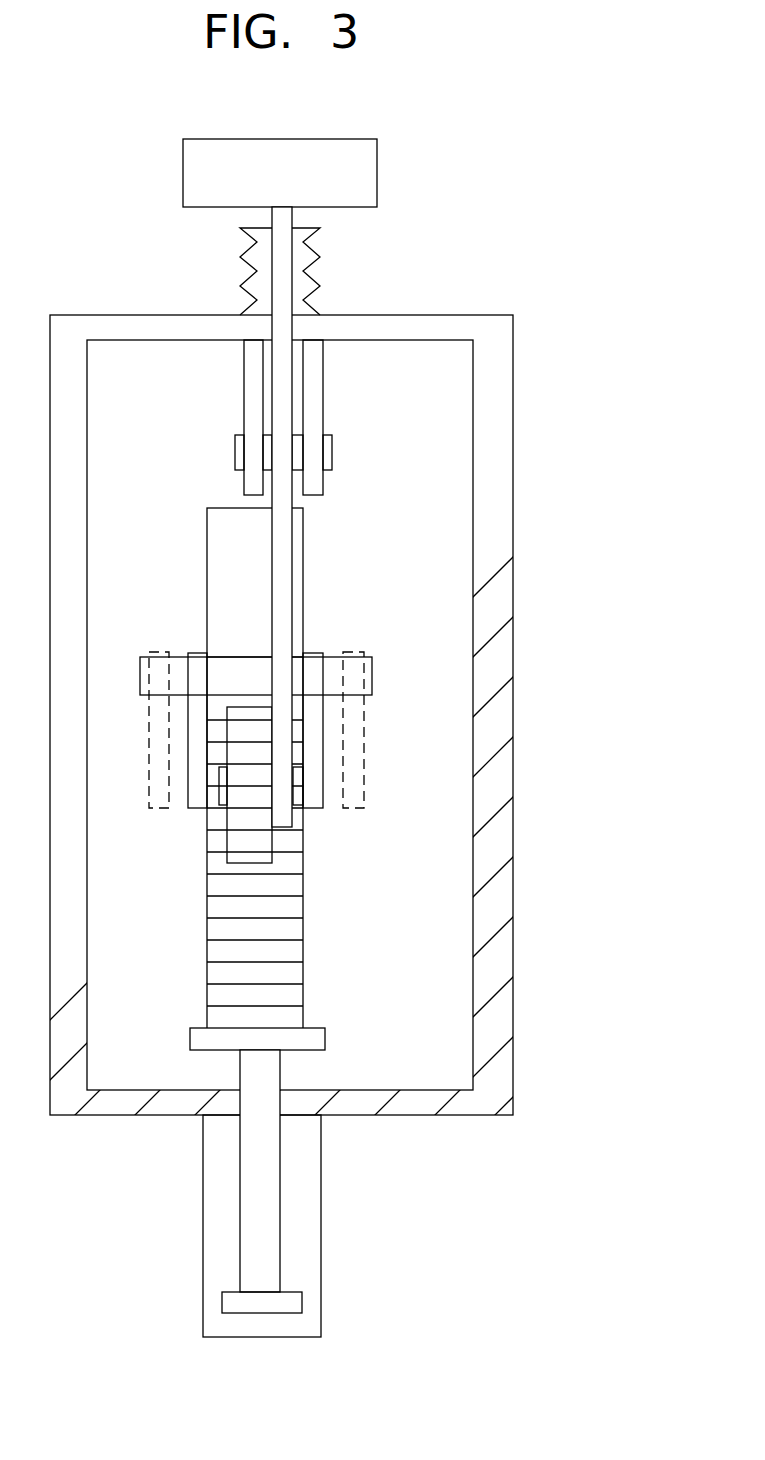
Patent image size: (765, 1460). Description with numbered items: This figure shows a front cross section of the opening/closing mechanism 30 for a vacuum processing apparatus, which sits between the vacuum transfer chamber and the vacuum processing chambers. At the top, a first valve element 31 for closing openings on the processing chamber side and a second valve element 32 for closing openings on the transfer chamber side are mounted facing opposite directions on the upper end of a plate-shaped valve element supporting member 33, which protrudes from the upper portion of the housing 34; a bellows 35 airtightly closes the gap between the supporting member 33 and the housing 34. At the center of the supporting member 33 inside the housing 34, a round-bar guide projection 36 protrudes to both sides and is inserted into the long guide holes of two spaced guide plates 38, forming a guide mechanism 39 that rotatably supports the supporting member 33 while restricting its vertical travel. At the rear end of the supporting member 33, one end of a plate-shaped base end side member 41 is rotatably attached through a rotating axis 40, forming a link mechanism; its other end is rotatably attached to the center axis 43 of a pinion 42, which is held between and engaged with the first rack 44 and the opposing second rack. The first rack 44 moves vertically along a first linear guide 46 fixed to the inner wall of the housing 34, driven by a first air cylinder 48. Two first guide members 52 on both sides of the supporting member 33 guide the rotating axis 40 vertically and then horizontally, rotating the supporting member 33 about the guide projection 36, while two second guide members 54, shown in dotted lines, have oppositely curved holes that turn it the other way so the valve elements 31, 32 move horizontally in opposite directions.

The opening/closing mechanism 30 is at (500, 276).
The first valve element 31 is at (187, 186).
The second valve element 32 is at (365, 154).
The valve element supporting member 33 is at (268, 218).
The housing 34 is at (510, 380).
The bellows 35 is at (320, 250).
The guide projection 36 is at (333, 447).
The guide plate 38 is at (243, 412).
The guide mechanism 39 is at (200, 372).
The rotating axis 40 is at (372, 677).
The base end side member 41 is at (290, 720).
The pinion 42 is at (260, 752).
The center axis 43 is at (298, 778).
The first rack 44 is at (295, 905).
The first linear guide 46 is at (206, 551).
The first air cylinder 48 is at (320, 1143).
The first guide member 52 is at (195, 653).
The second guide member 54 is at (152, 762).